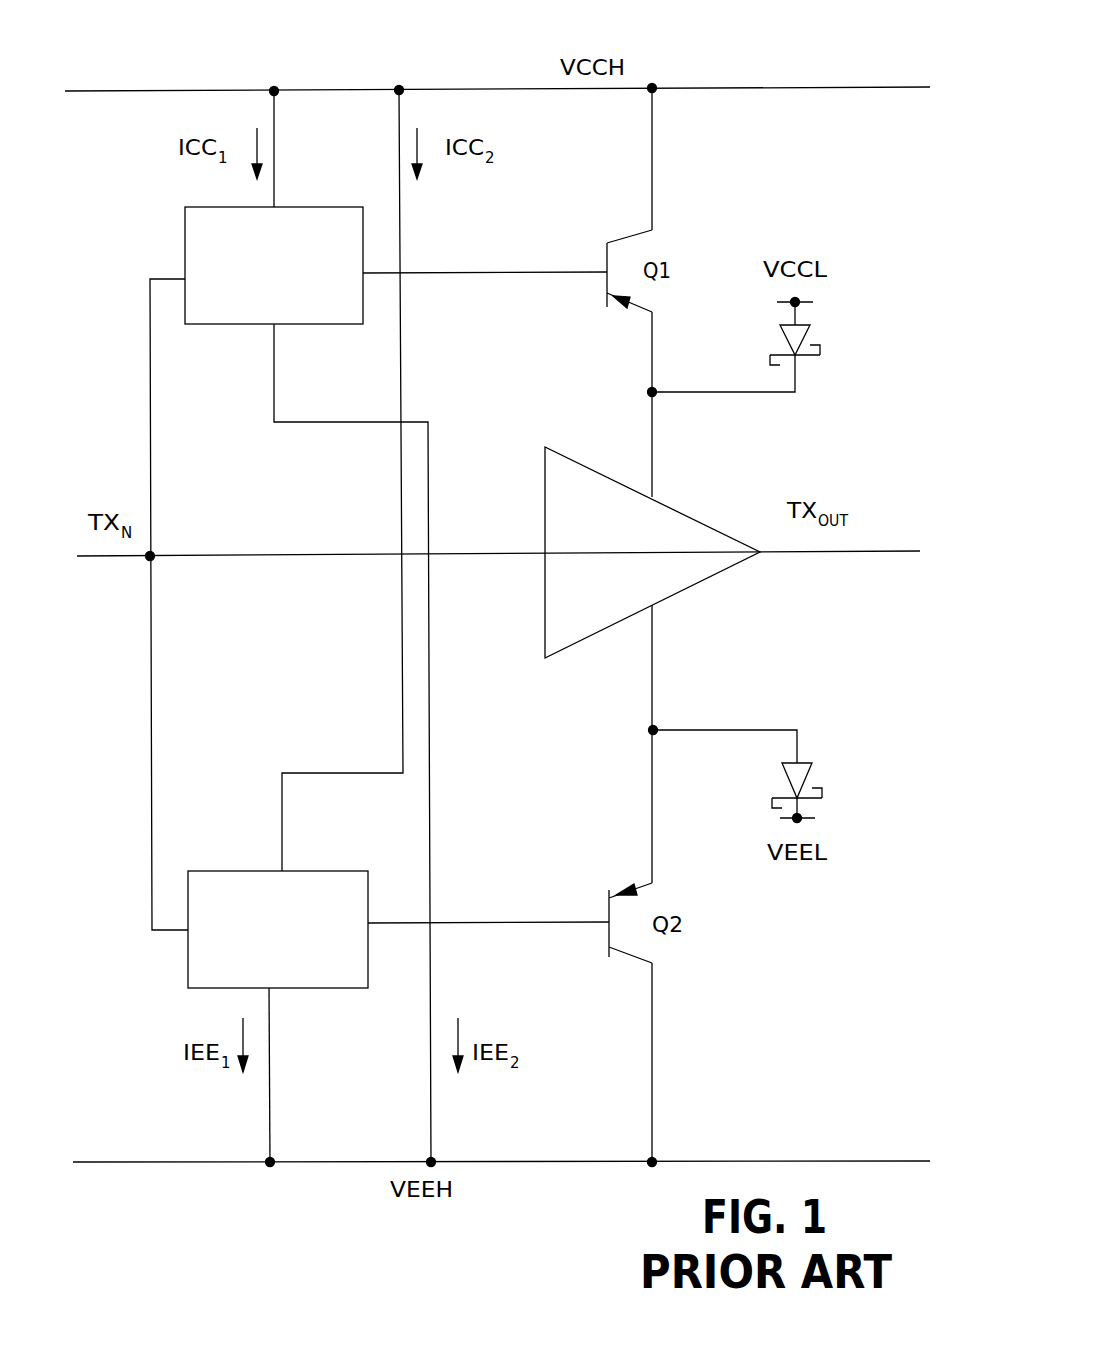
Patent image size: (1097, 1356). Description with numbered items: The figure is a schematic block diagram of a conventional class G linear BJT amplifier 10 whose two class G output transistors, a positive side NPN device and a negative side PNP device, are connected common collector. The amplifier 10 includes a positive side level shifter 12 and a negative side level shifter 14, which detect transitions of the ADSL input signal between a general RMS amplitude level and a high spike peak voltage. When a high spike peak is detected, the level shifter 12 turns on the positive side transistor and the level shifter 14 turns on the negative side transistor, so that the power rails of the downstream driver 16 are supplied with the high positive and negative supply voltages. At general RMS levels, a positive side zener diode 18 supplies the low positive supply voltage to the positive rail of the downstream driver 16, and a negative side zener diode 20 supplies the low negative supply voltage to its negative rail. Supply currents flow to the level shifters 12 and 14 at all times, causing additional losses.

The class G linear BJT amplifier 10 is at (817, 62).
The positive side level shifter 12 is at (327, 207).
The negative side level shifter 14 is at (327, 871).
The downstream driver 16 is at (572, 460).
The positive side zener diode 18 is at (852, 319).
The negative side zener diode 20 is at (852, 746).